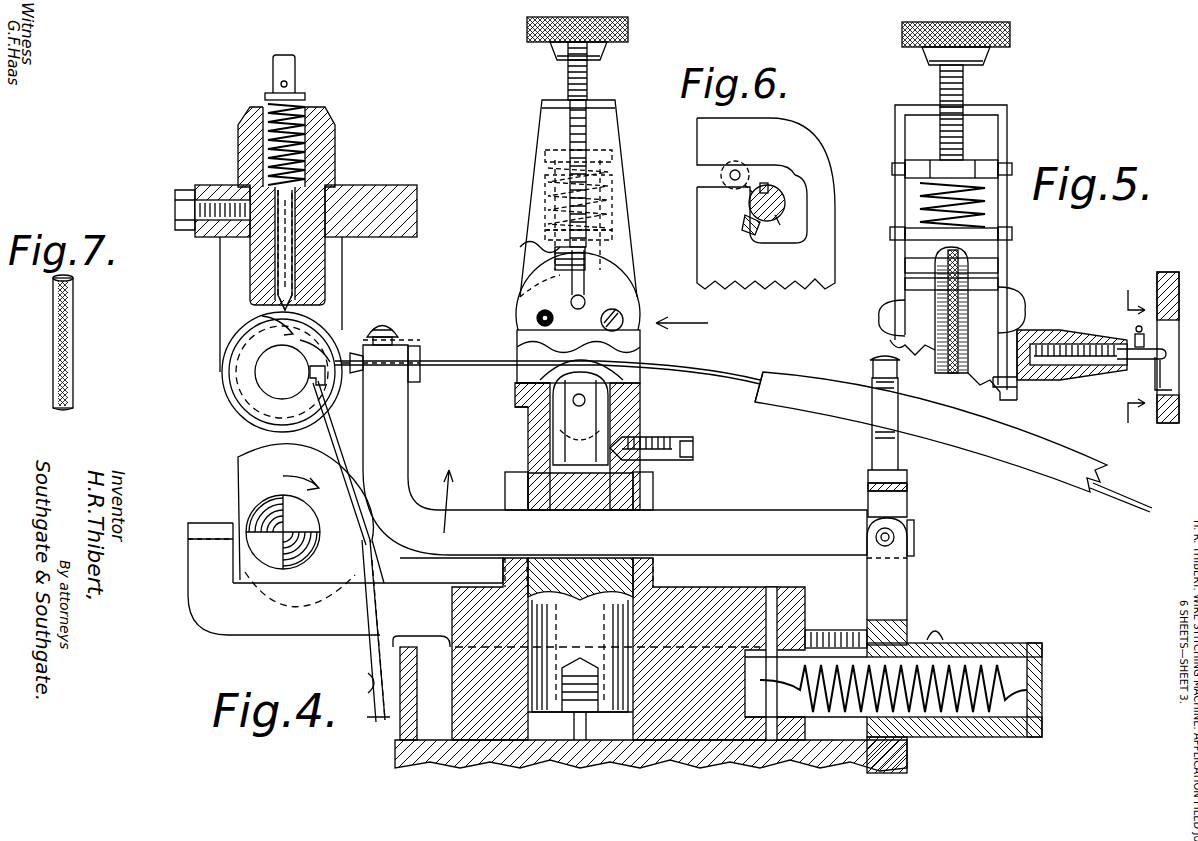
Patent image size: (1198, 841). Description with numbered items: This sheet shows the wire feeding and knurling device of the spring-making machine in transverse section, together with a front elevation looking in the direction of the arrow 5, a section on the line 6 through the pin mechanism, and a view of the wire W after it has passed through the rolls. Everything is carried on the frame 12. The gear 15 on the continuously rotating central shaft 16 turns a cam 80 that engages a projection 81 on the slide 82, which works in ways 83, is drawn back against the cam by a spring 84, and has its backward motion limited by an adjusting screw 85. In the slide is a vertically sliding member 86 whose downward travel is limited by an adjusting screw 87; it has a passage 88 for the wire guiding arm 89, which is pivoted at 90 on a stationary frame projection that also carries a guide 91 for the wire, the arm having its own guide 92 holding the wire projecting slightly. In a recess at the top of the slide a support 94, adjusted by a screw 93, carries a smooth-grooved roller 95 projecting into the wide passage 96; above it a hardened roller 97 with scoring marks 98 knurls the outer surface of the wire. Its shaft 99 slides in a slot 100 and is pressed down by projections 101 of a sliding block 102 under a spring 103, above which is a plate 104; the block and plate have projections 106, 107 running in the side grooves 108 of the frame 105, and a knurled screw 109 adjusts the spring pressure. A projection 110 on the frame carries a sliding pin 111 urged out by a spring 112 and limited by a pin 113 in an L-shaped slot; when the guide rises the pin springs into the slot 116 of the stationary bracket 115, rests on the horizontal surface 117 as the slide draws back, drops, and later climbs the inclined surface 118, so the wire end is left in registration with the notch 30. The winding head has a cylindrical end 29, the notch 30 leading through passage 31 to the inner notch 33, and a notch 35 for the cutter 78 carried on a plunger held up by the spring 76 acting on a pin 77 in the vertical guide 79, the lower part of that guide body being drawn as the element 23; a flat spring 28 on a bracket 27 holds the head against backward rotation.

In FIG. 4, the arrow 5 is at (682, 317).
In FIG. 5, the section line 6— 6 is at (1133, 360).
In FIG. 4, the frame 12 is at (404, 195).
In FIG. 4, the gear 15 is at (292, 72).
In FIG. 4, the central shaft 16 is at (250, 512).
In FIG. 4, the lower body of plunger housing 23 is at (336, 265).
In FIG. 4, the bracket 27 is at (375, 562).
In FIG. 4, the spring 28 is at (327, 425).
In FIG. 4, the cylindrical end 29 is at (238, 352).
In FIG. 4, the notch 30 is at (313, 350).
In FIG. 4, the passage 31 is at (312, 372).
In FIG. 4, the notch 33 is at (310, 355).
In FIG. 4, the notch 35 is at (262, 322).
In FIG. 4, the spring 76 is at (305, 110).
In FIG. 4, the pin 77 is at (281, 83).
In FIG. 4, the cutter 78 is at (300, 302).
In FIG. 4, the vertical guide 79 is at (335, 150).
In FIG. 4, the cam 80 is at (247, 470).
In FIG. 4, the projection 81 is at (190, 563).
In FIG. 4, the slide 82 is at (702, 596).
In FIG. 4, the ways 83 is at (402, 720).
In FIG. 4, the spring 84 is at (966, 658).
In FIG. 4, the adjusting screw 85 is at (816, 636).
In FIG. 4, the member 86 is at (580, 635).
In FIG. 4, the adjusting screw 87 is at (585, 717).
In FIG. 4, the passage 88 is at (636, 510).
In FIG. 4, the wire guiding arm 89 is at (791, 523).
In FIG. 4, the pivot 90 is at (894, 538).
In FIG. 4, the guide 91 is at (1025, 470).
In FIG. 4, the guide 92 is at (408, 348).
In FIG. 4, the screw 93 is at (694, 455).
In FIG. 4, the support 94 is at (530, 437).
In FIG. 4, the roller 95 is at (640, 382).
In FIG. 4, the passage 96 is at (641, 356).
In FIG. 5, the passage 96 is at (983, 351).
In FIG. 4, the roller 97 is at (550, 257).
In FIG. 5, the roller 97 is at (938, 299).
In FIG. 5, the scoring marks 98 is at (953, 374).
In FIG. 4, the shaft 99 is at (586, 300).
In FIG. 4, the slot 100 is at (566, 331).
In FIG. 4, the projections 101 is at (596, 273).
In FIG. 5, the projections 101 is at (985, 282).
In FIG. 4, the sliding block 102 is at (527, 246).
In FIG. 5, the sliding block 102 is at (985, 260).
In FIG. 4, the spring 103 is at (608, 207).
In FIG. 5, the spring 103 is at (925, 190).
In FIG. 4, the plate 104 is at (603, 167).
In FIG. 5, the plate 104 is at (921, 167).
In FIG. 4, the frame 105 is at (543, 143).
In FIG. 5, the frame 105 is at (1007, 125).
In FIG. 4, the projections 106 is at (588, 231).
In FIG. 5, the projections 106 is at (897, 240).
In FIG. 4, the projections 107 is at (568, 158).
In FIG. 5, the projections 107 is at (893, 170).
In FIG. 4, the side grooves 108 is at (586, 135).
In FIG. 4, the screw 109 is at (587, 80).
In FIG. 5, the screw 109 is at (963, 88).
In FIG. 5, the projection 110 is at (1085, 344).
In FIG. 6, the projection 110 is at (781, 192).
In FIG. 5, the sliding pin 111 is at (1125, 362).
In FIG. 6, the sliding pin 111 is at (791, 229).
In FIG. 5, the spring 112 is at (1040, 381).
In FIG. 5, the pin 113 is at (1141, 334).
In FIG. 6, the pin 113 is at (766, 182).
In FIG. 5, the bracket 115 is at (1166, 272).
In FIG. 6, the bracket 115 is at (808, 281).
In FIG. 5, the slot 116 is at (1153, 423).
In FIG. 6, the slot 116 is at (791, 216).
In FIG. 6, the horizontal surface 117 is at (719, 186).
In FIG. 5, the inclined surface 118 is at (1151, 375).
In FIG. 6, the inclined surface 118 is at (752, 232).
In FIG. 4, the wire W is at (463, 367).
In FIG. 7, the wire W is at (74, 361).